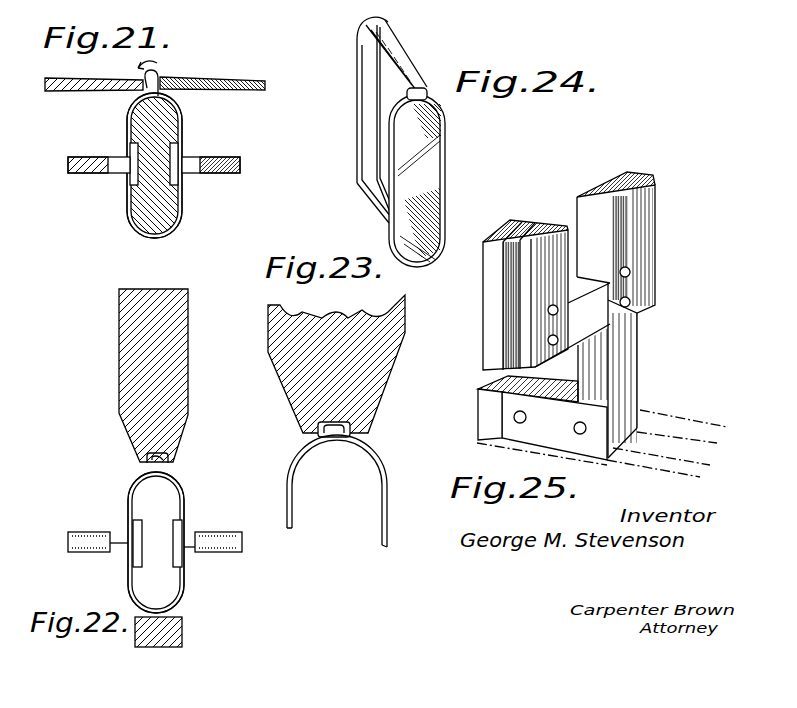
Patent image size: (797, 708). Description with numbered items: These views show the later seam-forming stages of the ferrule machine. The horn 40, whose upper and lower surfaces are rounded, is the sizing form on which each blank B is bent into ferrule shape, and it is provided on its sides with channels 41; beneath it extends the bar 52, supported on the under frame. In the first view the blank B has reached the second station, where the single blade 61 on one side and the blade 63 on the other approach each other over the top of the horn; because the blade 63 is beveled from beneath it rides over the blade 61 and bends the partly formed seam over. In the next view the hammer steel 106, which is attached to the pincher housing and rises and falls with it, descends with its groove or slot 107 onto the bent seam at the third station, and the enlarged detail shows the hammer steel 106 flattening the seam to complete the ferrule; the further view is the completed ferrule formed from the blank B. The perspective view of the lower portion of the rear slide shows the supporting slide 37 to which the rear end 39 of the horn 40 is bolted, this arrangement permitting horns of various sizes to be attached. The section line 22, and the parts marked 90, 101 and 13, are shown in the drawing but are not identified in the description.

In FIG. 21, the blade 61 is at (80, 92).
In FIG. 21, the blade 63 is at (245, 91).
In FIG. 21, the channels 41 is at (129, 148).
In FIG. 22, the channels 41 is at (184, 522).
In FIG. 21, the bars 90 is at (241, 161).
In FIG. 22, the bars 90 is at (80, 548).
In FIG. 21, the horn 40 is at (112, 207).
In FIG. 22, the horn 40 is at (127, 494).
In FIG. 23, the horn 40 is at (286, 471).
In FIG. 25, the horn 40 is at (683, 420).
In FIG. 21, the blank B is at (127, 220).
In FIG. 24, the blank B is at (449, 175).
In FIG. 22, the hammer steel 106 is at (191, 421).
In FIG. 23, the hammer steel 106 is at (400, 362).
In FIG. 22, the neck 101 is at (190, 450).
In FIG. 22, the casing wall 13 is at (186, 570).
In FIG. 22, the bar 52 is at (183, 622).
In FIG. 23, the groove or slot 107 is at (352, 430).
In FIG. 24, the section line 22 is at (440, 12).
In FIG. 25, the supporting slide 37 is at (556, 384).
In FIG. 25, the rear end 39 is at (478, 440).